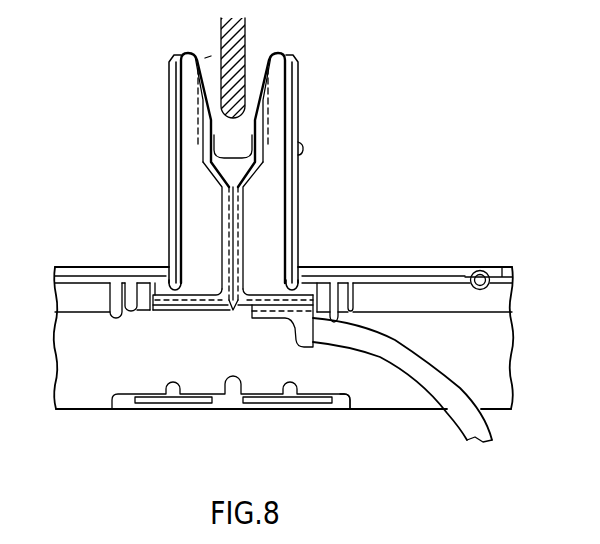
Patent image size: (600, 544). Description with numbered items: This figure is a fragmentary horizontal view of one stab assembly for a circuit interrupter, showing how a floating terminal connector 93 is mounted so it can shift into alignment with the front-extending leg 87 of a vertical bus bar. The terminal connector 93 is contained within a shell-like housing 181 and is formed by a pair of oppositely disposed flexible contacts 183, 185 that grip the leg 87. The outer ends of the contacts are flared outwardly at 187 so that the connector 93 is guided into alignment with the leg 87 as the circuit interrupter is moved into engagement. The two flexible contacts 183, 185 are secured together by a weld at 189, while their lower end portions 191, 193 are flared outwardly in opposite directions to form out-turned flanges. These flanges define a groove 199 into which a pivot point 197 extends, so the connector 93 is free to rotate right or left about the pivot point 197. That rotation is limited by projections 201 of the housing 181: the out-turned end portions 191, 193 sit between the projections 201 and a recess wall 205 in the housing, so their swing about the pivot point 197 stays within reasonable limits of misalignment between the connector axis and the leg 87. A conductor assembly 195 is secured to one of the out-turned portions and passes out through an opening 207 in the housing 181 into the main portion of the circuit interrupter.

The leg 87 is at (246, 20).
The terminal connector 93 is at (213, 45).
The housing 181 is at (302, 146).
The flexible contact 183 is at (208, 96).
The flexible contact 185 is at (251, 100).
The flared outer ends 187 is at (197, 52).
The weld 189 is at (241, 200).
The lower end portion 191 is at (193, 302).
The lower end portion 193 is at (250, 294).
The conductor assembly 195 is at (297, 331).
The pivot point 197 is at (233, 313).
The groove 199 is at (222, 286).
The projections 201 is at (170, 262).
The recess wall 205 is at (167, 312).
The opening 207 is at (350, 409).